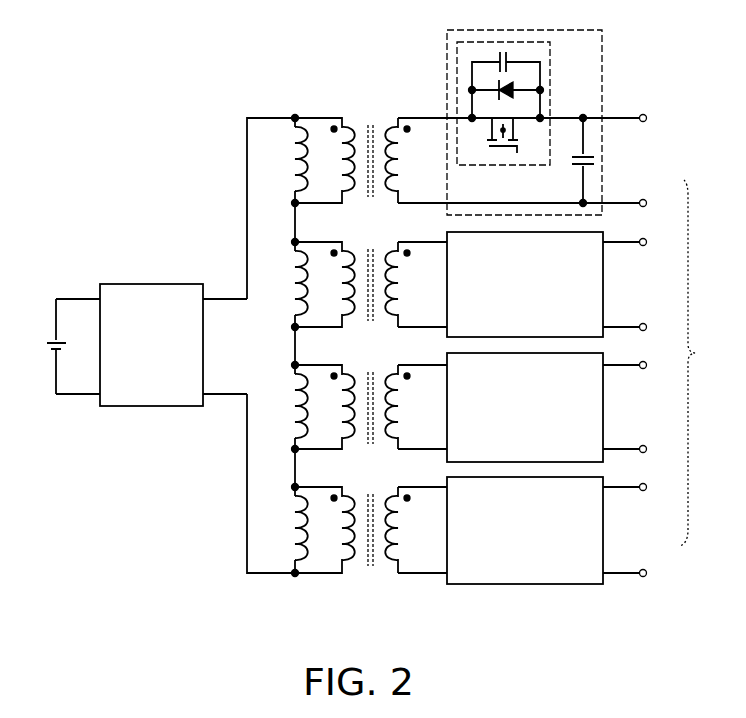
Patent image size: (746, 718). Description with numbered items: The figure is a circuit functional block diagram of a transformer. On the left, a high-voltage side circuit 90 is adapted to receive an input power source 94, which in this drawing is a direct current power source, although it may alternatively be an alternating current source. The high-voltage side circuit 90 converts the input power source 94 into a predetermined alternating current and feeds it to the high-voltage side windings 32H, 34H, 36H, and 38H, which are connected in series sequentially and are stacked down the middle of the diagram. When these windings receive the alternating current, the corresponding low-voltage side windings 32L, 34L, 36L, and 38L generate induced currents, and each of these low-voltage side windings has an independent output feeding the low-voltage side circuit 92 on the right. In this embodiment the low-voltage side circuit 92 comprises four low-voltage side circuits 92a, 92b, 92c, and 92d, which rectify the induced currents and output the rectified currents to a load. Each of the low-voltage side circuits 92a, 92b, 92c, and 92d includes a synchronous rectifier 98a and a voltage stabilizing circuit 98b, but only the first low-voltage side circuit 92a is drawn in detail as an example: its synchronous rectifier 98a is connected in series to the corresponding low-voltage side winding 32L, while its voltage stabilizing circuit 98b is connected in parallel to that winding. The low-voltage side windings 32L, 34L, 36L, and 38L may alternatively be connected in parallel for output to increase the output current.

The high-voltage side circuit 90 is at (166, 360).
The input power source 94 is at (48, 340).
The high-voltage side winding 32H is at (350, 172).
The low-voltage side winding 32L is at (392, 136).
The high-voltage side winding 34H is at (350, 268).
The low-voltage side winding 34L is at (390, 255).
The high-voltage side winding 36H is at (350, 422).
The low-voltage side winding 36L is at (396, 440).
The high-voltage side winding 38H is at (350, 517).
The low-voltage side winding 38L is at (394, 566).
The low-voltage side circuit 92 is at (704, 363).
The first low-voltage side circuit 92a is at (541, 122).
The low-voltage side circuit 92b is at (603, 282).
The low-voltage side circuit 92c is at (603, 406).
The low-voltage side circuit 92d is at (603, 530).
The synchronous rectifier 98a is at (553, 76).
The voltage stabilizing circuit 98b is at (590, 157).